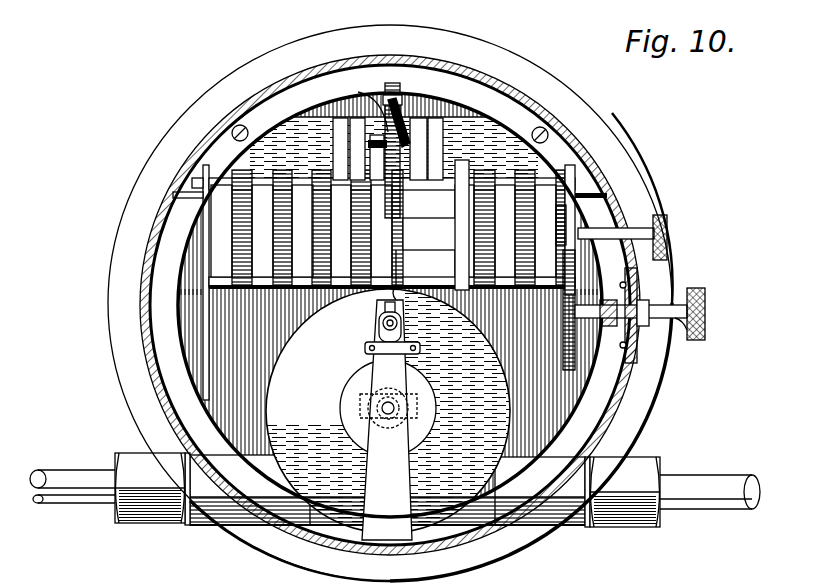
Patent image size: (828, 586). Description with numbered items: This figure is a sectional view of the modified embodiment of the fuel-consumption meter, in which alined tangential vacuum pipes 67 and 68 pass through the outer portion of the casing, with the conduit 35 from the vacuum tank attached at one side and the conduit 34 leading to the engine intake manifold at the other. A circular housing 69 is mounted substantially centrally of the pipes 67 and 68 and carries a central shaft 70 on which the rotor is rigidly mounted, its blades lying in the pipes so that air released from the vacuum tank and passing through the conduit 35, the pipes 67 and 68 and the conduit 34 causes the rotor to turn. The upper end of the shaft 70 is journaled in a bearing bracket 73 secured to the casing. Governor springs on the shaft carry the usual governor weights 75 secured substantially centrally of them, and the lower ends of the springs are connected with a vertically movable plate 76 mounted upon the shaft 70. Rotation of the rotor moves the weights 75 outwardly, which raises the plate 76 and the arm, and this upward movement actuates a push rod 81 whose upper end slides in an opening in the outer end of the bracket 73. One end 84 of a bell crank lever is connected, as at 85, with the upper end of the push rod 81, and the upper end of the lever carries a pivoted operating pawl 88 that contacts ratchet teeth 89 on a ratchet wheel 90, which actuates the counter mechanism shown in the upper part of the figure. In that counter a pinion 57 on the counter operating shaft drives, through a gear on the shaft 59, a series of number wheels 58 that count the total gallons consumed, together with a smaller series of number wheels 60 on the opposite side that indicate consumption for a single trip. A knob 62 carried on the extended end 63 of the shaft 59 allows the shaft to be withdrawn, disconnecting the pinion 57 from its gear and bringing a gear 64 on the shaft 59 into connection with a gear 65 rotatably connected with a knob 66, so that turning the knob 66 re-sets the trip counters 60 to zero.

The conduit 34 is at (719, 476).
The second conduit 35 is at (60, 470).
The pinion 57 is at (436, 225).
The number wheels 58 is at (258, 180).
The shaft 59 is at (399, 262).
The smaller series of number wheels 60 is at (543, 178).
The knob 62 is at (667, 232).
The extended end of shaft 63 is at (638, 232).
The gear 64 is at (562, 223).
The gear 65 is at (570, 366).
The knob 66 is at (705, 307).
The tangential vacuum pipe 67 is at (212, 489).
The tangential vacuum pipe 68 is at (577, 492).
The circular housing 69 is at (272, 381).
The central shaft 70 is at (388, 416).
The bearing bracket 73 is at (387, 420).
The governor weights 75 is at (360, 406).
The vertically movable plate 76 is at (355, 380).
The push rod 81 is at (383, 323).
The end of bell crank lever 84 is at (400, 306).
The connection 85 is at (404, 326).
The operating pawl 88 is at (371, 112).
The ratchet teeth 89 is at (400, 82).
The ratchet wheel 90 is at (385, 95).